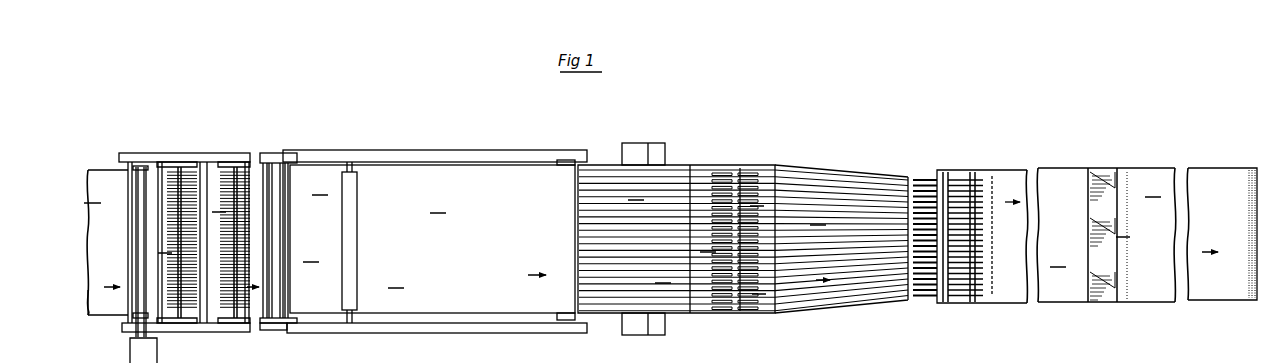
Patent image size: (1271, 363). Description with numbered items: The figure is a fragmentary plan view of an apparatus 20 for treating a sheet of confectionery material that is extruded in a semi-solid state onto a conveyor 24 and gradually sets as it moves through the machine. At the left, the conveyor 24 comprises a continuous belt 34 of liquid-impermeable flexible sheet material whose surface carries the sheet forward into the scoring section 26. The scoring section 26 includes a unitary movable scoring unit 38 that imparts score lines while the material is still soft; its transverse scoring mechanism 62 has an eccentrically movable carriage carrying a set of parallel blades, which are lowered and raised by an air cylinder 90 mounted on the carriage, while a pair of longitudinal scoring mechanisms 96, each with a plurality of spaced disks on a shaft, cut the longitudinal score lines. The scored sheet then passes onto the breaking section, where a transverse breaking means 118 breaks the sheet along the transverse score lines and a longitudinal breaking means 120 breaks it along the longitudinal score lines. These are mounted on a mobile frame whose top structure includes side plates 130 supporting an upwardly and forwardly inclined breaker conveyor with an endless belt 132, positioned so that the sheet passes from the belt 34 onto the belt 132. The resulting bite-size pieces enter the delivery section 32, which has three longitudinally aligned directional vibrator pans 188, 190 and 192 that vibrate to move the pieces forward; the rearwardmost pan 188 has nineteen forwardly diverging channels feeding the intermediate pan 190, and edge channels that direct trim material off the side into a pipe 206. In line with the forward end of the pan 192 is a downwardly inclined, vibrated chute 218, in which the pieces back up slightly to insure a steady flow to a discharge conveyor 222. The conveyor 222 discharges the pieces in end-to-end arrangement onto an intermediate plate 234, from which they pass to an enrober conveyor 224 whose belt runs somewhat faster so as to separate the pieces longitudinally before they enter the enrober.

The apparatus 20 is at (712, 120).
The conveyor 24 is at (92, 168).
The scoring section 26 is at (184, 205).
The delivery section 32 is at (751, 155).
The continuous belt 34 is at (98, 307).
The scoring unit 38 is at (197, 153).
The transverse scoring mechanism 62 is at (130, 157).
The air cylinder 90 is at (147, 350).
The longitudinal scoring mechanism 96 is at (178, 180).
The transverse breaking means 118 is at (270, 155).
The longitudinal breaking means 120 is at (355, 161).
The side plates 130 is at (467, 153).
The endless belt 132 is at (479, 248).
The rearwardmost vibrator pan 188 is at (626, 148).
The intermediate vibrator pan 190 is at (712, 162).
The forward vibrator pan 192 is at (828, 165).
The pipe 206 is at (659, 145).
The chute 218 is at (925, 171).
The discharge conveyor 222 is at (1030, 167).
The enrober conveyor 224 is at (1162, 166).
The intermediate plate 234 is at (1107, 295).